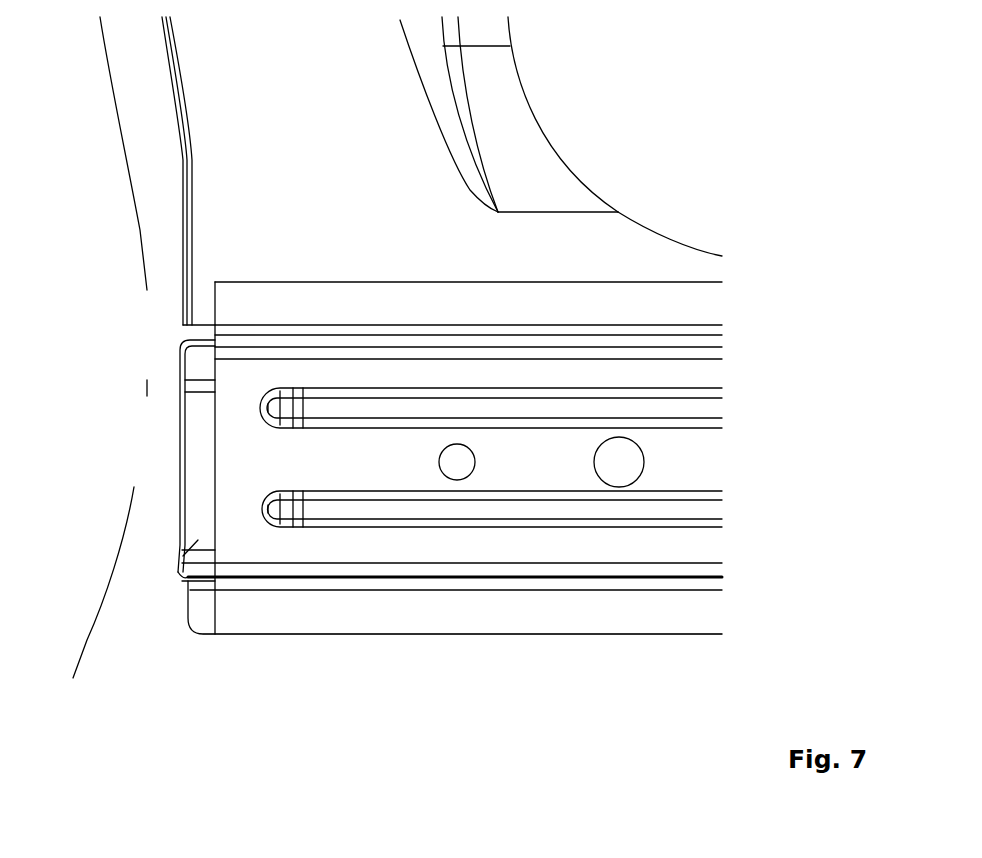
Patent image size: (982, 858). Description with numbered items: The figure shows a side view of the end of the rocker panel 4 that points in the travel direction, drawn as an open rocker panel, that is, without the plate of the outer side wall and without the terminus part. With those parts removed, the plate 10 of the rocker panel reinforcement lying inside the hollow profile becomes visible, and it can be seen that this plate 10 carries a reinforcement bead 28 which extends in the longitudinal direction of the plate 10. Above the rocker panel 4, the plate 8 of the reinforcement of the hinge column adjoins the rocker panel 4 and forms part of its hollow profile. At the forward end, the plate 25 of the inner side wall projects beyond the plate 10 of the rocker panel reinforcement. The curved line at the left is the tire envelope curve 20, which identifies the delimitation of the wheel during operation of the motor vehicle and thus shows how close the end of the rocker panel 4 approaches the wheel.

The rocker panel 4 is at (317, 648).
The plate of the reinforcement of the hinge column 8 is at (532, 176).
The plate of the rocker panel reinforcement 10 is at (593, 542).
The tire envelope curve 20 is at (133, 158).
The plate of the inner side wall 25 is at (178, 572).
The reinforcement bead 28 is at (465, 528).